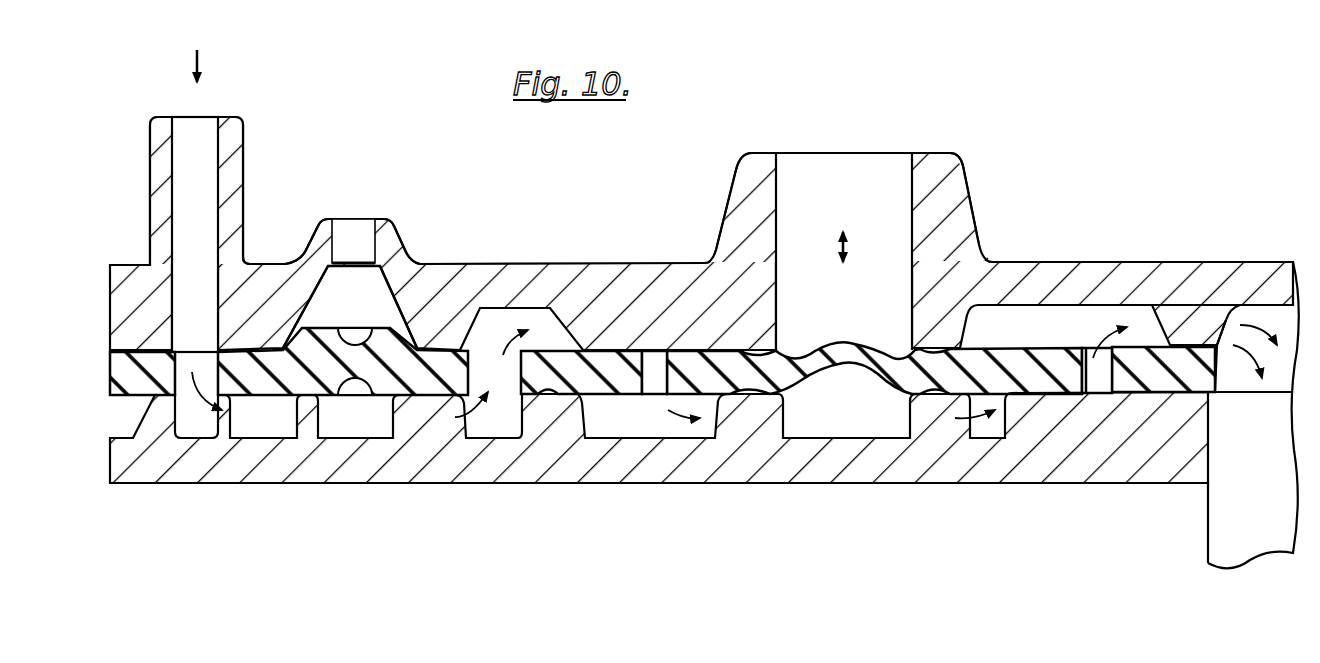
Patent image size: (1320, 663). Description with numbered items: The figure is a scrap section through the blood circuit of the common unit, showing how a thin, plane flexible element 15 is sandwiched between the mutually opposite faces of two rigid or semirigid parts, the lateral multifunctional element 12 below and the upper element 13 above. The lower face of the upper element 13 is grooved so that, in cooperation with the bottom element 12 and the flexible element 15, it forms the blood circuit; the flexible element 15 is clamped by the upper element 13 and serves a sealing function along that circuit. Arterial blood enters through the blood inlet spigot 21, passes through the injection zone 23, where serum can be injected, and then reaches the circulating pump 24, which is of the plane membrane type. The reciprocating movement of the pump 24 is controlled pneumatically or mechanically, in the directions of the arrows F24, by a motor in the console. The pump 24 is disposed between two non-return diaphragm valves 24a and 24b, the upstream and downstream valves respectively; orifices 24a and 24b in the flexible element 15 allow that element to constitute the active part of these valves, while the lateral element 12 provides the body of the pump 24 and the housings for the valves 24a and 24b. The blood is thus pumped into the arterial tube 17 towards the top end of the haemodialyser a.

The lateral multifunctional element 12 is at (873, 473).
The upper element 13 is at (643, 273).
The upper flexible element 15 is at (278, 370).
The arterial tube 17 is at (1253, 310).
The blood inlet spigot 21 is at (228, 128).
The injection zone 23 is at (372, 290).
The circulating pump 24 is at (887, 165).
The upstream non-return diaphragm valve 24a is at (648, 385).
The downstream non-return diaphragm valve 24b is at (1095, 380).
The arrows indicating pump reciprocating movement F24 is at (871, 243).
The haemodialyser a is at (1213, 513).